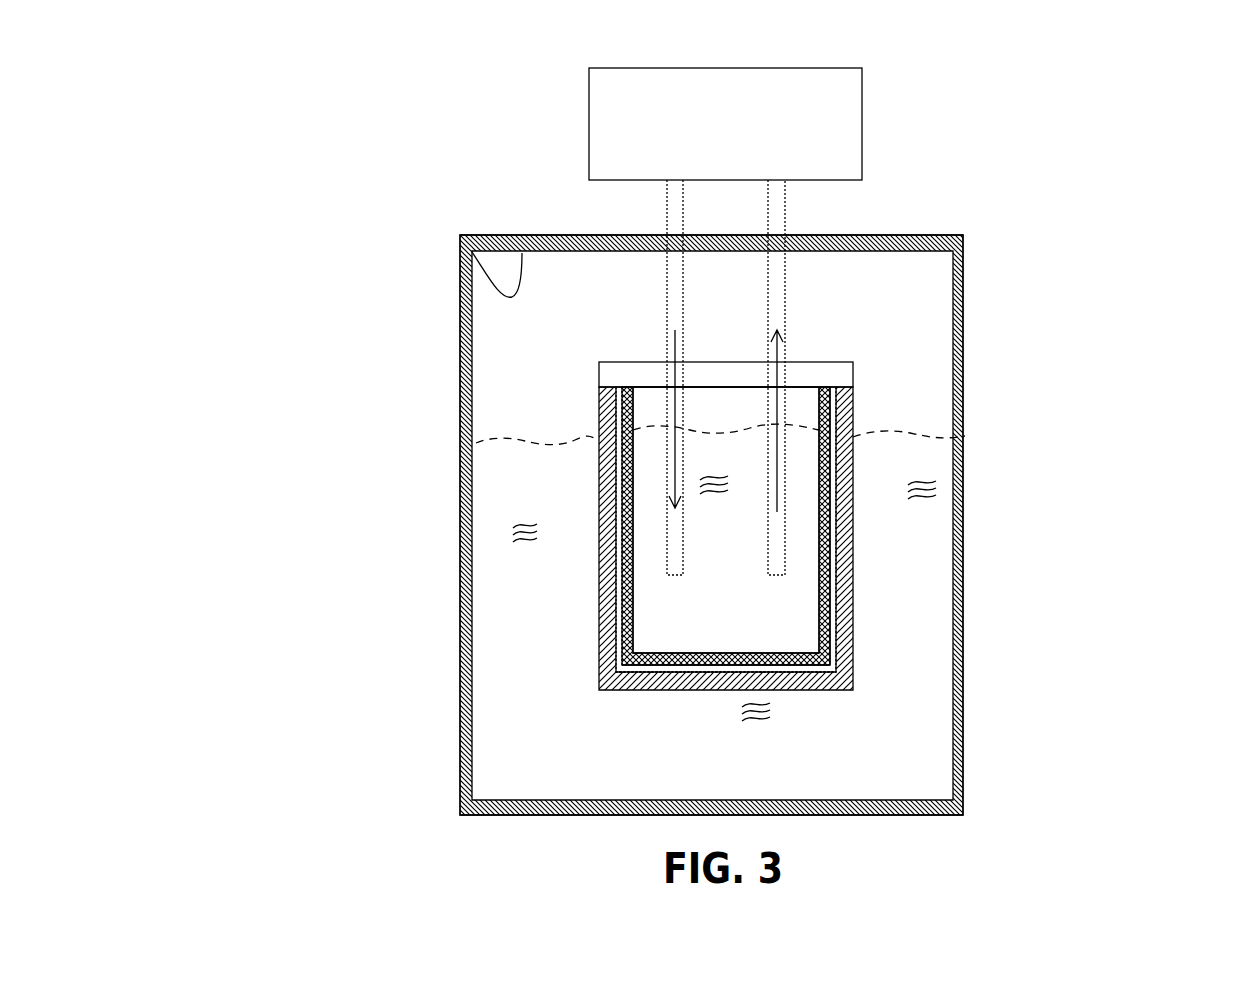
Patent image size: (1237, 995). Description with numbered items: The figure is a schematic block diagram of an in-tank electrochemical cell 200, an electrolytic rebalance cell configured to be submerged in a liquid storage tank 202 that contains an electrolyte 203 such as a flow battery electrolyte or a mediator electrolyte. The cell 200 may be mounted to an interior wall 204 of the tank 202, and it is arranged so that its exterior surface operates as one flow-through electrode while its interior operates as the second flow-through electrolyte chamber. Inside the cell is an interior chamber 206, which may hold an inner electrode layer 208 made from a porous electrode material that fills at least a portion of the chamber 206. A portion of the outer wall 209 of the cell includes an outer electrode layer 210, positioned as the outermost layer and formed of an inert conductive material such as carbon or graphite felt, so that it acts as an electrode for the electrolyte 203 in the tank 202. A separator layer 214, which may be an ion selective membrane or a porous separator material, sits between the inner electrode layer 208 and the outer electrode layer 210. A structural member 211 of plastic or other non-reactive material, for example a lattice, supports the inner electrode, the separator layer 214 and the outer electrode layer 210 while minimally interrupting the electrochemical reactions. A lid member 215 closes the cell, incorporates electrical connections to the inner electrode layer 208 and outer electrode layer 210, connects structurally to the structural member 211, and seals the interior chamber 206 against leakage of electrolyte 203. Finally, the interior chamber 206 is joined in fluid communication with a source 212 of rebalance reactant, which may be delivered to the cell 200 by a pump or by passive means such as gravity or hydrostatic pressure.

The in-tank electrochemical cell 200 is at (674, 565).
The liquid storage tank 202 is at (974, 715).
The electrolyte 203 is at (552, 517).
The interior wall 204 is at (467, 237).
The interior chamber 206 is at (713, 604).
The inner electrode layer 208 is at (826, 593).
The outer wall 209 is at (600, 550).
The outer electrode layer 210 is at (600, 598).
The structural member 211 is at (845, 662).
The source of rebalance reactant 212 is at (589, 125).
The separator layer 214 is at (833, 636).
The lid member 215 is at (832, 370).